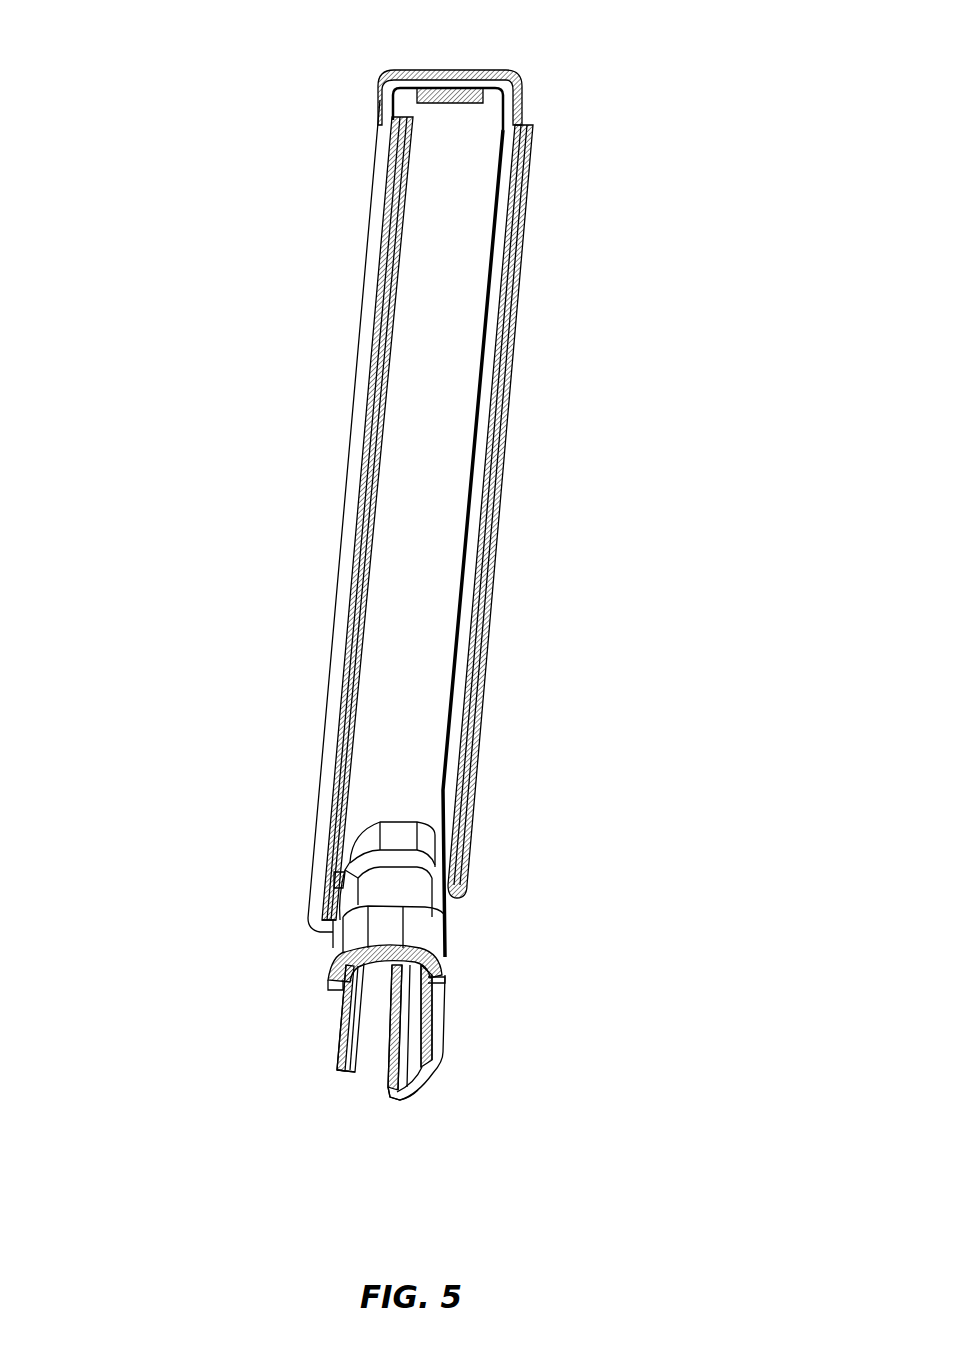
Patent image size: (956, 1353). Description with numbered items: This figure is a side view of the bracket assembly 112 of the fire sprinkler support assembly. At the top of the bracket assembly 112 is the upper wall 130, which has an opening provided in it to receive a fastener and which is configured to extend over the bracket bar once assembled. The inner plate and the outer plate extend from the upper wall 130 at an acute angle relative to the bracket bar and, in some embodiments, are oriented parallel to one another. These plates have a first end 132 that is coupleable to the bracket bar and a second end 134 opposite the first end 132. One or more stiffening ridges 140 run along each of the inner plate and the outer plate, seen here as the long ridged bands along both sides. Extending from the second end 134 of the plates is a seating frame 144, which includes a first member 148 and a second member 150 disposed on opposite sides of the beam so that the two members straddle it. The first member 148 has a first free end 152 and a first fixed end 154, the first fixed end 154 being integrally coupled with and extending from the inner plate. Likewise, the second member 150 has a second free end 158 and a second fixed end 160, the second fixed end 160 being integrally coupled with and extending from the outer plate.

The bracket assembly 112 is at (105, 166).
The upper wall 130 is at (443, 84).
The first end 132 is at (550, 112).
The second end 134 is at (496, 897).
The stiffening ridges 140 is at (493, 547).
The seating frame 144 is at (490, 1022).
The first member 148 is at (332, 1021).
The second member 150 is at (460, 1047).
The first free end 152 is at (352, 1074).
The first fixed end 154 is at (325, 930).
The second free end 158 is at (395, 1099).
The second fixed end 160 is at (427, 908).